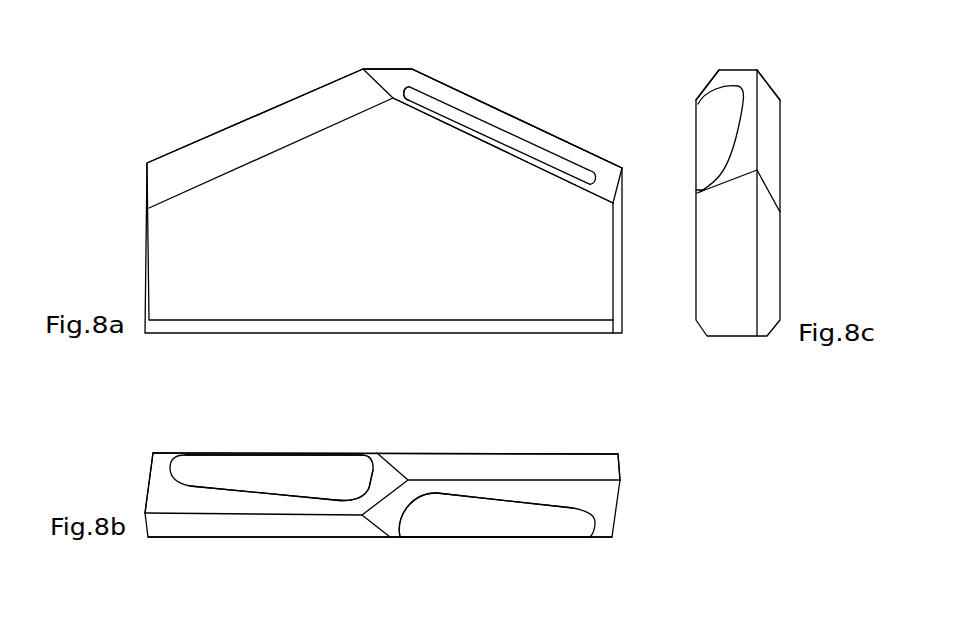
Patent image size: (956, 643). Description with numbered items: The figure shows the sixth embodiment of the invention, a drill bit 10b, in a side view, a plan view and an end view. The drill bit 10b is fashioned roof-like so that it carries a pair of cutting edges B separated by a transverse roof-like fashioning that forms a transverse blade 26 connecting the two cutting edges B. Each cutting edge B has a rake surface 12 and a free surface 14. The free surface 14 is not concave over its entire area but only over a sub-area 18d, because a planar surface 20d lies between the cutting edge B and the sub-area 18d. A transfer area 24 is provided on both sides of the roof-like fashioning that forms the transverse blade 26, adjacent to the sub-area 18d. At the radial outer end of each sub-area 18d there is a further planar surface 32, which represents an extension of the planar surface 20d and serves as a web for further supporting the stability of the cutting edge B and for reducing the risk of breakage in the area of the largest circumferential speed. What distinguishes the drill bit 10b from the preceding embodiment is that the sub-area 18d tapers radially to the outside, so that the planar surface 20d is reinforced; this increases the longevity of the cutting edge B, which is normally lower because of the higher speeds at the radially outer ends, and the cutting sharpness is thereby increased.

In FIG. 8A, the drill bit 10b is at (162, 149).
In FIG. 8C, the drill bit 10b is at (781, 275).
In FIG. 8B, the drill bit 10b is at (632, 503).
In FIG. 8A, the rake surface 12 is at (230, 146).
In FIG. 8C, the rake surface 12 is at (768, 142).
In FIG. 8B, the rake surface 12 is at (503, 464).
In FIG. 8A, the free surface 14 is at (504, 136).
In FIG. 8B, the free surface 14 is at (263, 474).
In FIG. 8A, the sub-area 18d is at (546, 156).
In FIG. 8C, the sub-area 18d is at (720, 122).
In FIG. 8B, the sub-area 18d is at (308, 475).
In FIG. 8A, the planar surface 20d is at (469, 97).
In FIG. 8C, the planar surface 20d is at (717, 82).
In FIG. 8B, the planar surface 20d is at (225, 498).
In FIG. 8A, the transfer area 24 is at (416, 98).
In FIG. 8B, the transfer area 24 is at (353, 476).
In FIG. 8B, the transverse blade 26 is at (385, 503).
In FIG. 8A, the planar surface 32 is at (608, 181).
In FIG. 8C, the planar surface 32 is at (700, 190).
In FIG. 8B, the planar surface 32 is at (163, 468).
In FIG. 8A, the cutting edge B is at (443, 79).
In FIG. 8C, the cutting edge B is at (762, 90).
In FIG. 8B, the cutting edge B is at (572, 477).